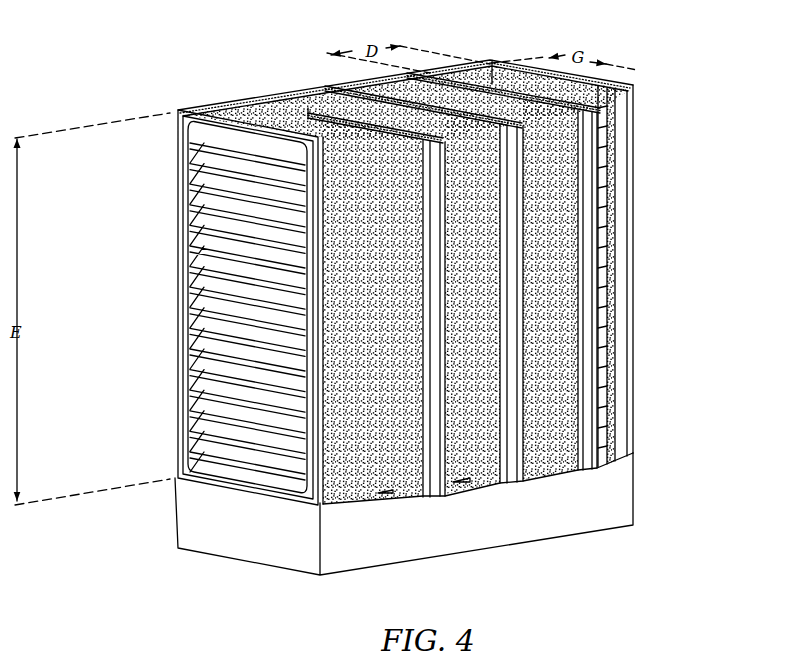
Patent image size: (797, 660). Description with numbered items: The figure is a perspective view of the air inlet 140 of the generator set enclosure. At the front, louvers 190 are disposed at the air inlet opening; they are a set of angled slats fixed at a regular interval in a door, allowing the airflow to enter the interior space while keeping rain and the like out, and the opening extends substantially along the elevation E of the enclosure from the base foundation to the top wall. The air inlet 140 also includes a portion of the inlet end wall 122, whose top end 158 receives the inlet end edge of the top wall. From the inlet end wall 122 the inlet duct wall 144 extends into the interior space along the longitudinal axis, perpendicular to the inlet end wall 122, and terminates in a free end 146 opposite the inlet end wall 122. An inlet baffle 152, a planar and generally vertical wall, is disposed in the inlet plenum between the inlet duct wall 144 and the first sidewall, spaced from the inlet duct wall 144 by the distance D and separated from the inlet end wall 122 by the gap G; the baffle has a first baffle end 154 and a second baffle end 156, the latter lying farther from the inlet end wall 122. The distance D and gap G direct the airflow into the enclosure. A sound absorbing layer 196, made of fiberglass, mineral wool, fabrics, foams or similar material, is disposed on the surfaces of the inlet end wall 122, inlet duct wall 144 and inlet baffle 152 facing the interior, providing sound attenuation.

The air inlet 140 is at (695, 44).
The inlet end wall 122 is at (262, 96).
The top end of the inlet end wall 158 is at (236, 103).
The first baffle end 154 is at (309, 111).
The second baffle end 156 is at (438, 155).
The louvers 190 is at (221, 253).
The free end 146 is at (516, 129).
The inlet duct wall 144 is at (516, 215).
The inlet baffle 152 is at (440, 336).
The sound absorbing layer 196 is at (523, 377).